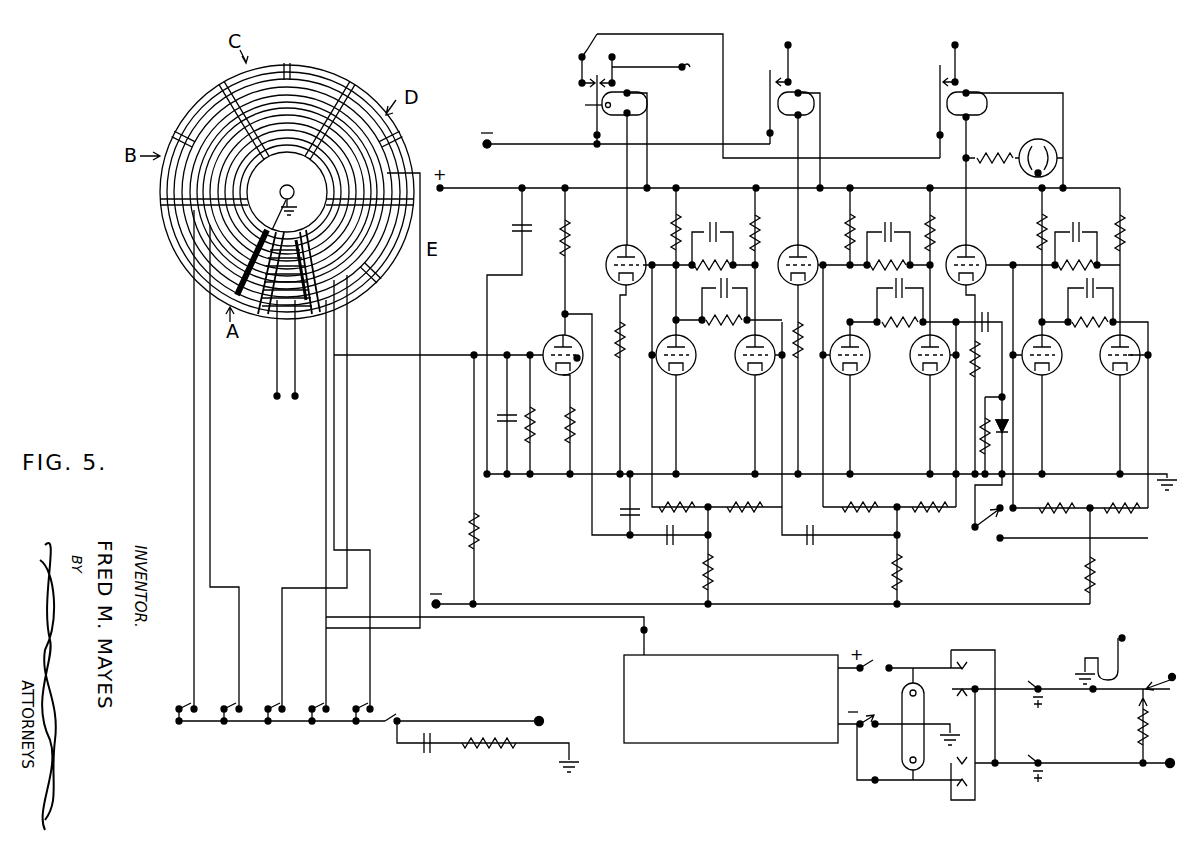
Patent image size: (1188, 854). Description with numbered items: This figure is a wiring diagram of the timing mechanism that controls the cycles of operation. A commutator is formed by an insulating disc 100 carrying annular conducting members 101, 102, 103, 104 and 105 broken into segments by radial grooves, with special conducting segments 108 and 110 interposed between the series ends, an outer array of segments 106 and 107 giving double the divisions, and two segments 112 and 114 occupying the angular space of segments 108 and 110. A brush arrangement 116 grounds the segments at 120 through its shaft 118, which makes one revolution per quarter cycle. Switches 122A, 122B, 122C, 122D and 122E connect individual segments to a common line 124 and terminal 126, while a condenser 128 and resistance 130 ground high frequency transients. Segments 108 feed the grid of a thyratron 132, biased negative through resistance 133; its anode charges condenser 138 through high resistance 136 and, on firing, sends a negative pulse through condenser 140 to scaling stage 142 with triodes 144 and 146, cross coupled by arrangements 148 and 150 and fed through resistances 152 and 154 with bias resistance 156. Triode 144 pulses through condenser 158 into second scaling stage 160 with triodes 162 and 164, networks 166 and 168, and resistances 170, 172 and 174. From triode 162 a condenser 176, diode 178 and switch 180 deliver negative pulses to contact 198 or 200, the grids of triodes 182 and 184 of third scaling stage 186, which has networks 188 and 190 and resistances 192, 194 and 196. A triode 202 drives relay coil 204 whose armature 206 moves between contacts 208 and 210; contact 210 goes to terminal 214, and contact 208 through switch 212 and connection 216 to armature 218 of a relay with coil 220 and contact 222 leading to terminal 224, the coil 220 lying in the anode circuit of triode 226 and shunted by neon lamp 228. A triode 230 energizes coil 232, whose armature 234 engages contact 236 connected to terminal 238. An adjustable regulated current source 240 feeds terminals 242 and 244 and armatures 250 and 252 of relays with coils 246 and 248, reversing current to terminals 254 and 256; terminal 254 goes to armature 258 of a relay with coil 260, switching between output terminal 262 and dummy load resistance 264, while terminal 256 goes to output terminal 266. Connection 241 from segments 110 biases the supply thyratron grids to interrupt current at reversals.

The insulating disc 100 is at (379, 106).
The annular conducting member 101 is at (182, 218).
The annular conducting member 102 is at (212, 248).
The annular conducting member 103 is at (215, 214).
The annular conducting member 104 is at (225, 199).
The annular conducting member 105 is at (228, 189).
The outer array of segments 106 is at (205, 270).
The outer array of segments 107 is at (198, 228).
The special conducting segments 108 is at (268, 312).
The special conducting segments 110 is at (306, 215).
The segment 112 is at (297, 335).
The segment 114 is at (272, 330).
The brush arrangement 116 is at (266, 210).
The shaft 118 is at (282, 178).
The ground 120 is at (308, 194).
The switch 122A is at (170, 706).
The switch 122B is at (220, 706).
The switch 122C is at (263, 706).
The switch 122D is at (307, 706).
The switch 122E is at (351, 706).
The common line 124 is at (385, 714).
The terminal 126 is at (554, 707).
The condenser 128 is at (424, 754).
The resistance 130 is at (516, 746).
The thyratron 132 is at (548, 348).
The resistance 133 is at (481, 526).
The high resistance 136 is at (570, 232).
The condenser 138 is at (620, 513).
The condenser 140 is at (668, 540).
The scaling stage 142 is at (752, 228).
The triode 144 is at (694, 354).
The triode 146 is at (743, 365).
The resistance-capacitance arrangement 148 is at (700, 230).
The resistance-capacitance arrangement 150 is at (714, 300).
The resistance 152 is at (654, 512).
The resistance 154 is at (726, 512).
The resistance 156 is at (713, 569).
The condenser 158 is at (815, 540).
The second scaling stage 160 is at (928, 228).
The triode 162 is at (867, 354).
The triode 164 is at (915, 365).
The condenser-resistance arrangement 166 is at (875, 230).
The condenser-resistance arrangement 168 is at (888, 300).
The resistance 170 is at (844, 512).
The resistance 172 is at (906, 512).
The resistance 174 is at (902, 569).
The condenser 176 is at (986, 320).
The diode 178 is at (1010, 428).
The switch 180 is at (989, 502).
The triode 182 is at (1058, 354).
The triode 184 is at (1110, 365).
The third scaling stage 186 is at (1118, 228).
The condenser-resistance network 188 is at (1065, 230).
The condenser-resistance network 190 is at (1092, 300).
The resistance 192 is at (1044, 512).
The resistance 194 is at (1098, 512).
The resistance 196 is at (1100, 566).
The contact 198 is at (1006, 519).
The contact 200 is at (1002, 542).
The triode 202 is at (638, 256).
The relay coil 204 is at (640, 105).
The armature 206 is at (576, 105).
The contact 208 is at (571, 100).
The contact 210 is at (629, 71).
The switch 212 is at (590, 42).
The terminal 214 is at (664, 77).
The connection 216 is at (723, 86).
The armature 218 is at (940, 65).
The relay coil 220 is at (975, 108).
The contact 222 is at (971, 79).
The terminal 224 is at (976, 58).
The triode 226 is at (985, 256).
The neon lamp 228 is at (1036, 139).
The triode 230 is at (810, 256).
The relay coil 232 is at (812, 103).
The armature 234 is at (770, 70).
The contact 236 is at (803, 79).
The terminal 238 is at (807, 58).
The adjustable regulated D. C. current source 240 is at (746, 657).
The connection 241 is at (502, 618).
The terminal 242 is at (874, 660).
The terminal 244 is at (879, 749).
The operating coil 246 is at (915, 683).
The operating coil 248 is at (908, 776).
The armature 250 is at (948, 662).
The armature 252 is at (930, 806).
The terminal 254 is at (1040, 688).
The terminal 256 is at (1042, 772).
The armature 258 is at (1136, 726).
The energizing coil 260 is at (1100, 658).
The output terminal 262 is at (1170, 678).
The dummy load resistance 264 is at (1132, 735).
The output terminal 266 is at (1170, 772).